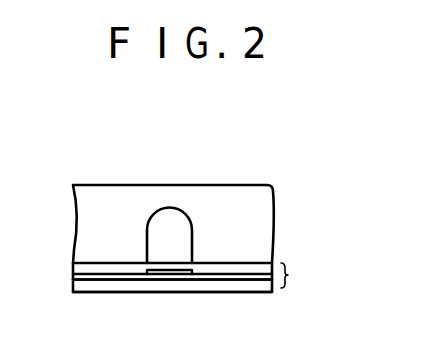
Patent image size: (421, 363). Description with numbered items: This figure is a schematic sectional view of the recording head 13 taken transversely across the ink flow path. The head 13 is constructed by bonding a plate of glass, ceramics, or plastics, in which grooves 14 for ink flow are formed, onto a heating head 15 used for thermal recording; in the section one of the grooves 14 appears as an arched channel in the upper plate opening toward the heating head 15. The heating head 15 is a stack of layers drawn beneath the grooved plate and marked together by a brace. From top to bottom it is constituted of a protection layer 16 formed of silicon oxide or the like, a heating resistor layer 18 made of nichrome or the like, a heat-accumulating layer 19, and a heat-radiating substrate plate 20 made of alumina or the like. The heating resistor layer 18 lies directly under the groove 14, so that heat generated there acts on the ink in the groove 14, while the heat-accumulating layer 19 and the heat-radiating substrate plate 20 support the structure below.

The head 13 is at (77, 185).
The grooves 14 is at (176, 207).
The heating head 15 is at (192, 278).
The protection layer 16 is at (213, 263).
The heating resistor layer 18 is at (155, 275).
The heat-accumulating layer 19 is at (197, 280).
The heat-radiating substrate plate 20 is at (252, 292).